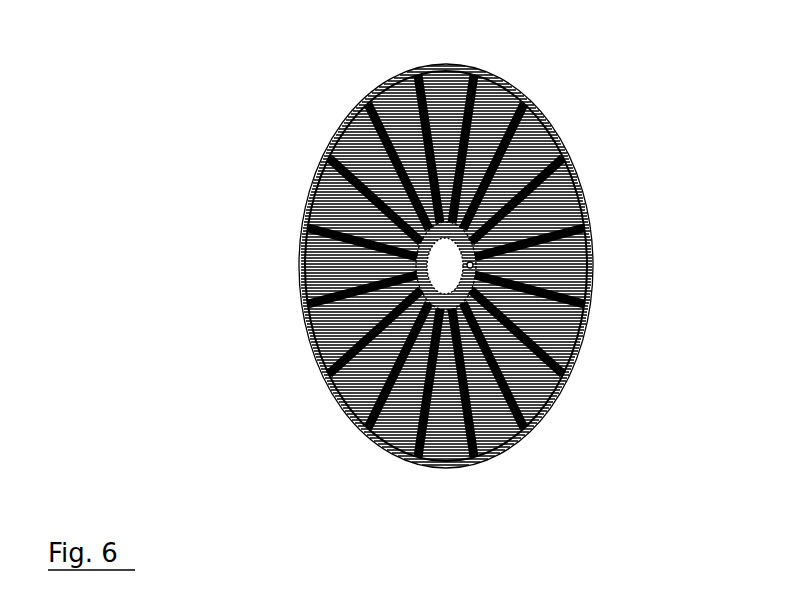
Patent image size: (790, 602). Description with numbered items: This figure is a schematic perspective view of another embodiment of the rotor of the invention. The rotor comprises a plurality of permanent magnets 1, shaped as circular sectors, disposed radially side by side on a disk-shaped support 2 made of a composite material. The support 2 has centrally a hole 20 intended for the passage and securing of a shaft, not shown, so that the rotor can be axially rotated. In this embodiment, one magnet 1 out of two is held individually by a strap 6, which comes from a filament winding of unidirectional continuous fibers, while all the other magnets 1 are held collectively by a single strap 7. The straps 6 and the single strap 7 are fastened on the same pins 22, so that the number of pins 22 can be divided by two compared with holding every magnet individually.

The permanent magnet 1 is at (493, 428).
The disk-shaped support 2 is at (522, 98).
The strap 6 is at (443, 345).
The single strap 7 is at (400, 350).
The hole 20 is at (447, 266).
The pin 22 is at (473, 265).